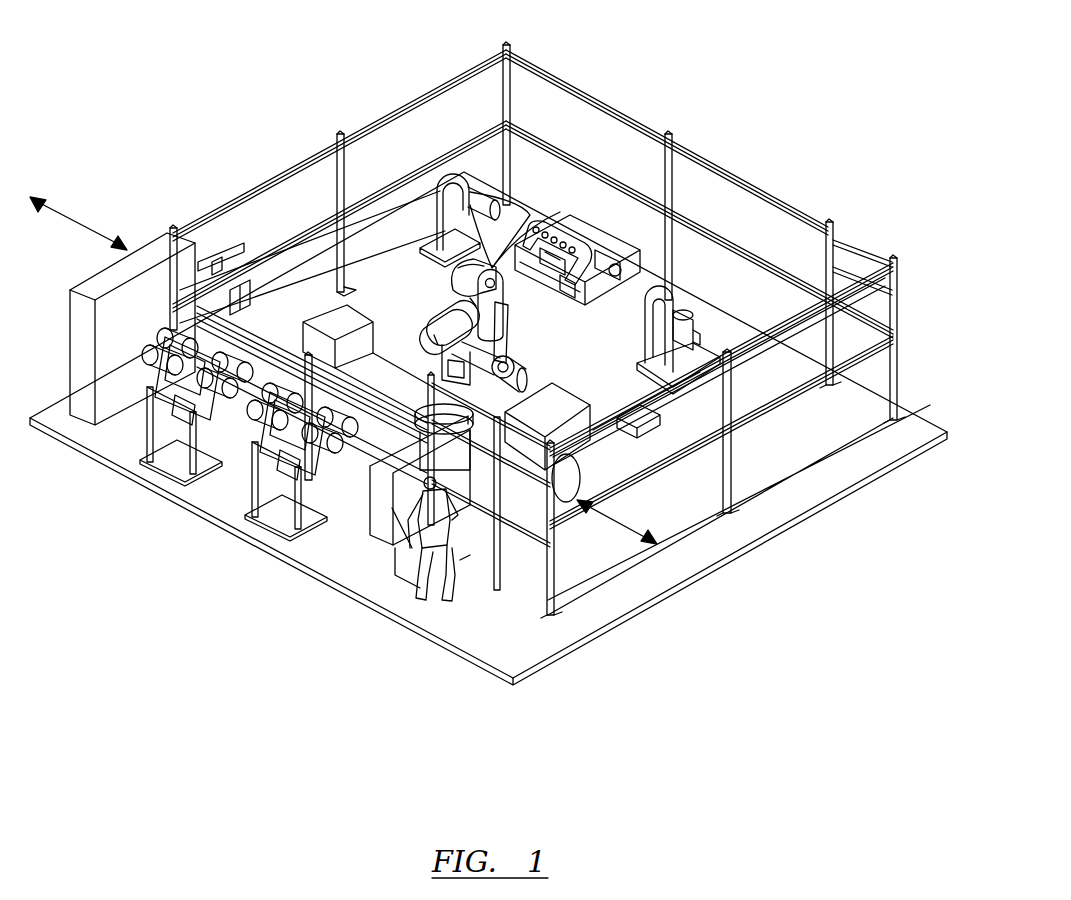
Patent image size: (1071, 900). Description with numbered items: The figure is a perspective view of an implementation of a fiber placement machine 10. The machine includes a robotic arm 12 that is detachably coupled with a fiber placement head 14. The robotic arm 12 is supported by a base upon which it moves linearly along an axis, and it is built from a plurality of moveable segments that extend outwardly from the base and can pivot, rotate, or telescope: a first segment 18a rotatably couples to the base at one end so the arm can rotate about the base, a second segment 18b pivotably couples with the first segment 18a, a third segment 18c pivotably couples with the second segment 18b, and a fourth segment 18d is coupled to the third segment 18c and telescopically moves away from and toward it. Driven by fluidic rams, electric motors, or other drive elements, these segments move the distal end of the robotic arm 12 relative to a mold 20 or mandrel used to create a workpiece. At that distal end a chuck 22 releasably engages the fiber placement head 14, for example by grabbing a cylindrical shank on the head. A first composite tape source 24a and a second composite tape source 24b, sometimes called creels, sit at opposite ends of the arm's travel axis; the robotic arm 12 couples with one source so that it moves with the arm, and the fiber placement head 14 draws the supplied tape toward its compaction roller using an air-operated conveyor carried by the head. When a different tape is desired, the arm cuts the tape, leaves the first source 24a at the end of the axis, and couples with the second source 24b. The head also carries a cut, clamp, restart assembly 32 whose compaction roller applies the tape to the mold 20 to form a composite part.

The fiber placement machine 10 is at (705, 80).
The robotic arm 12 is at (430, 318).
The fiber placement head 14 is at (635, 262).
The first segment 18a is at (470, 410).
The second segment 18b is at (400, 360).
The third segment 18c is at (448, 300).
The fourth segment 18d is at (500, 265).
The mold 20 is at (636, 285).
The chuck 22 is at (518, 280).
The first composite tape source 24a is at (568, 428).
The second composite tape source 24b is at (318, 340).
The cut, clamp, restart (CCR) assembly 32 is at (570, 240).